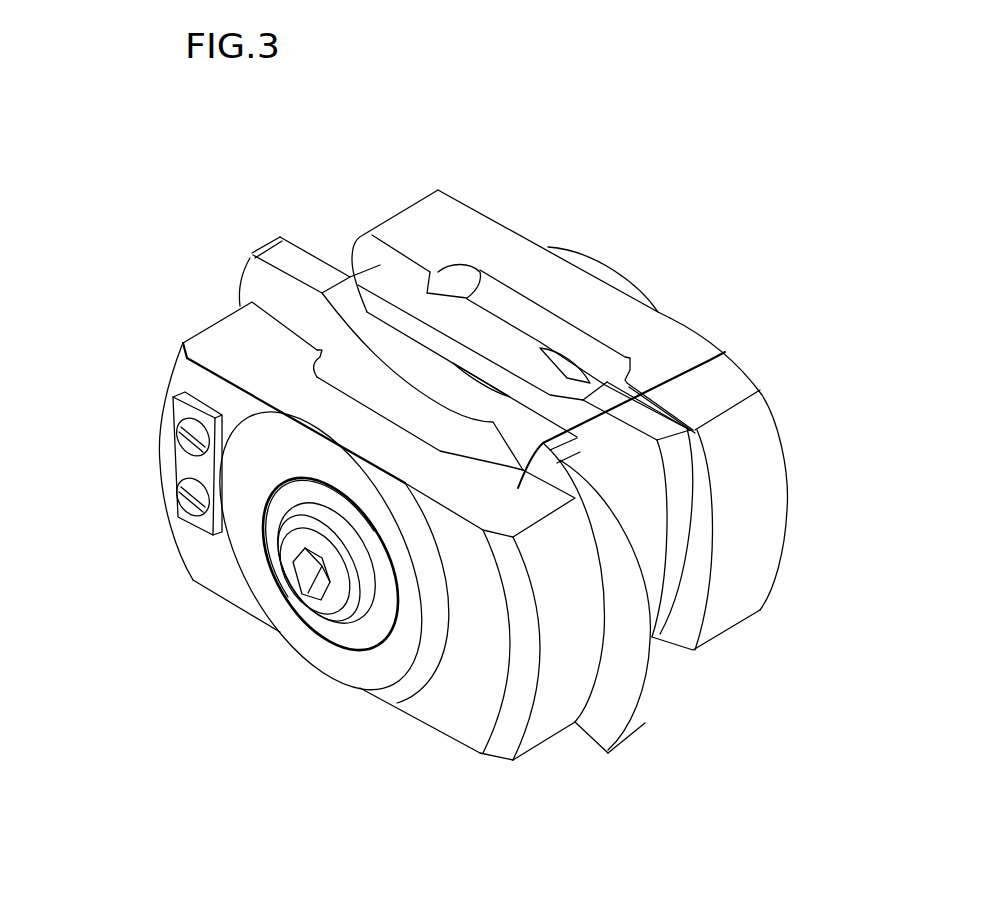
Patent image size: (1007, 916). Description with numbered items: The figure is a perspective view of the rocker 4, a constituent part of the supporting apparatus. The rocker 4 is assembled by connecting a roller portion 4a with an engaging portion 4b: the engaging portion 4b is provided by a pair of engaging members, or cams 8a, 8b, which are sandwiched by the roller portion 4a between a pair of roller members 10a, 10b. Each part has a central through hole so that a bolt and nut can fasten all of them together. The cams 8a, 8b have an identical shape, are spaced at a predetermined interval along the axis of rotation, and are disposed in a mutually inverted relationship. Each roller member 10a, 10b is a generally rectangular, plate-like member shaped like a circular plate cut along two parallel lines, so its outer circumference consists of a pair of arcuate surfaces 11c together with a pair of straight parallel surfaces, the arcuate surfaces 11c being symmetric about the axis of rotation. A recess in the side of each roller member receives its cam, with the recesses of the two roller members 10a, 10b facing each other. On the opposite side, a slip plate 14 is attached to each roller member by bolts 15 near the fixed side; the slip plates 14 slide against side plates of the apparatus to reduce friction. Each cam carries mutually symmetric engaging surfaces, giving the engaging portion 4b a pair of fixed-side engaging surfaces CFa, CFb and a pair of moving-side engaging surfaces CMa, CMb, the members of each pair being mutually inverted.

The rocker 4 is at (440, 158).
The roller portion 4a is at (850, 252).
The engaging portion 4b is at (557, 105).
The engaging member (cam) 8a is at (363, 317).
The engaging member (cam) 8b is at (487, 318).
The roller member 10a is at (705, 365).
The roller member 10b is at (700, 360).
The arcuate surface 11c is at (404, 207).
The slip plate 14 is at (170, 418).
The bolt 15 is at (180, 437).
The engaging surface CFa is at (250, 258).
The engaging surface CFb is at (352, 258).
The engaging surface CMa is at (630, 713).
The engaging surface CMb is at (683, 545).